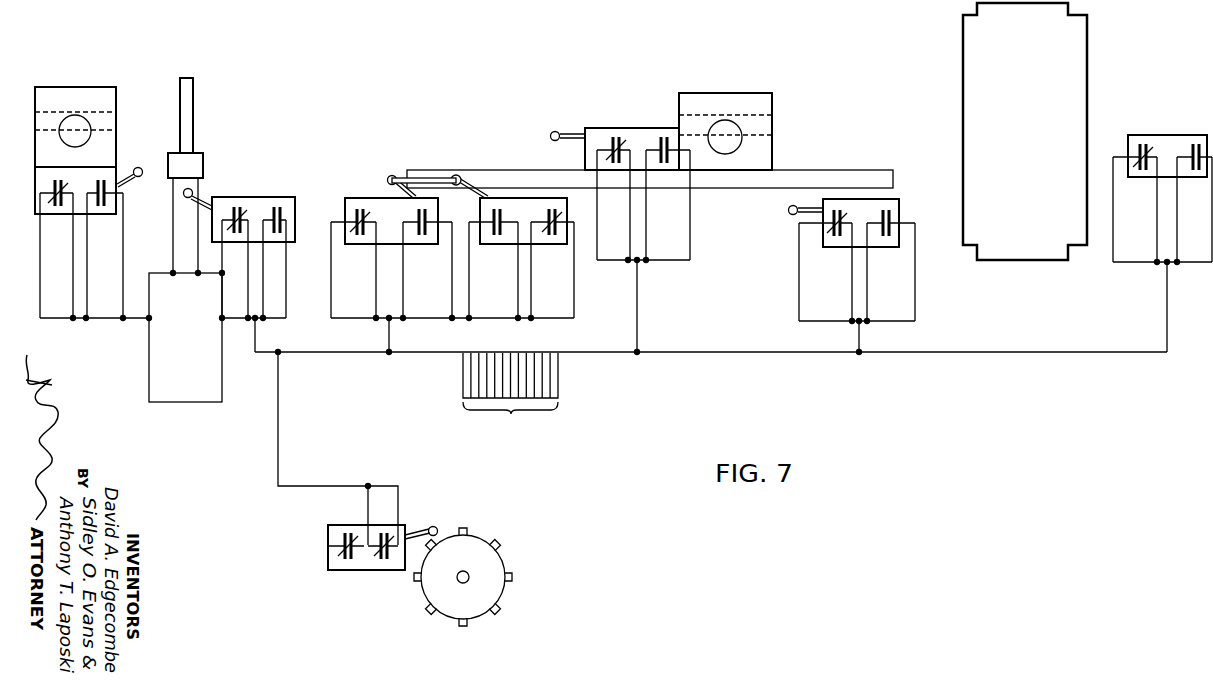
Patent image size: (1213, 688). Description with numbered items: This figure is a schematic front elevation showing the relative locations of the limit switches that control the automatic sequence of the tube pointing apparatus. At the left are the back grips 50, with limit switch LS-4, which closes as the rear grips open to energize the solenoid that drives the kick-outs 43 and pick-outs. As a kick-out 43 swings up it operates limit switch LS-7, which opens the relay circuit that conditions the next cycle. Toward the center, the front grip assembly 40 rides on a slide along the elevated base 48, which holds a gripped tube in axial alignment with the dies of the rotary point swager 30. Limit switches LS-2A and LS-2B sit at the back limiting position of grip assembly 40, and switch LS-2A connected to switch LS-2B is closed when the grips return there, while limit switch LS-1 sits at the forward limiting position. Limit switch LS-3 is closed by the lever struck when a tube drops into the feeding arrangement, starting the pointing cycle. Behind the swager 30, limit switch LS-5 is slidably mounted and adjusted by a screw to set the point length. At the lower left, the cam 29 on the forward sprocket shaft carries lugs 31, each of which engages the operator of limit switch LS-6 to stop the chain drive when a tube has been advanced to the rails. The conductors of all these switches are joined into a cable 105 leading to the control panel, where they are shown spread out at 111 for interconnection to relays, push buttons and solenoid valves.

The back grip assembly 50 is at (119, 118).
The kick-outs 43 is at (194, 131).
The limit switch LS-4 is at (118, 177).
The limit switch LS-7 is at (277, 197).
The limit switch LS-2A is at (367, 195).
The limit switch LS-2B is at (503, 244).
The elevated base 48 is at (737, 186).
The limit switch LS-3 is at (621, 229).
The front grip assembly 40 is at (776, 125).
The limit switch LS-1 is at (898, 200).
The rotary point swager 30 is at (1037, 251).
The limit switch LS-5 is at (1166, 135).
The cable 105 is at (687, 352).
The spread-out conductors 111 is at (512, 414).
The limit switch LS-6 is at (367, 570).
The cam 29 is at (480, 565).
The lugs 31 is at (497, 545).